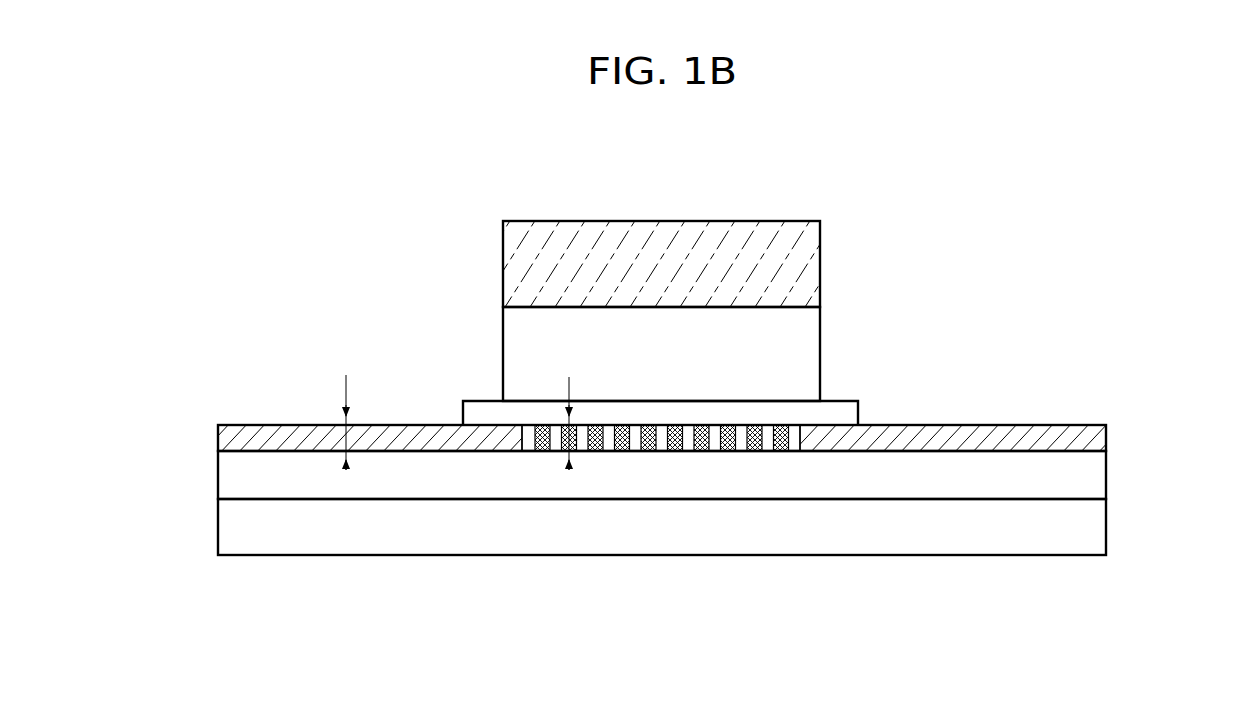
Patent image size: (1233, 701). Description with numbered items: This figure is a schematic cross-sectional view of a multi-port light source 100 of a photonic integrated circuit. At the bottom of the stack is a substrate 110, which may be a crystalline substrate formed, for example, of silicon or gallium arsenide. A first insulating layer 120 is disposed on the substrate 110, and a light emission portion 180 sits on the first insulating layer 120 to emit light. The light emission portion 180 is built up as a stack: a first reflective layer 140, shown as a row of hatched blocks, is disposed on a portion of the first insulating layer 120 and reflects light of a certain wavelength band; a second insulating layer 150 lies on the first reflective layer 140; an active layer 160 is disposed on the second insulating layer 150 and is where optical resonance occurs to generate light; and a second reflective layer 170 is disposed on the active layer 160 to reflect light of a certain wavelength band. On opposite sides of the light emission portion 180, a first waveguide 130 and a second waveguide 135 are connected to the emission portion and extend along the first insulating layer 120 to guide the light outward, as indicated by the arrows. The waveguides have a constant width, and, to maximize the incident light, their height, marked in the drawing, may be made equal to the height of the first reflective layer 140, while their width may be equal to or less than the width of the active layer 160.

The multi-port light source 100 is at (292, 240).
The substrate 110 is at (1106, 528).
The first insulating layer 120 is at (1106, 478).
The first waveguide 130 is at (663, 437).
The second waveguide 135 is at (1106, 439).
The first reflective layer 140 is at (522, 467).
The second insulating layer 150 is at (848, 398).
The active layer 160 is at (820, 344).
The second reflective layer 170 is at (687, 260).
The light emission portion 180 is at (719, 305).